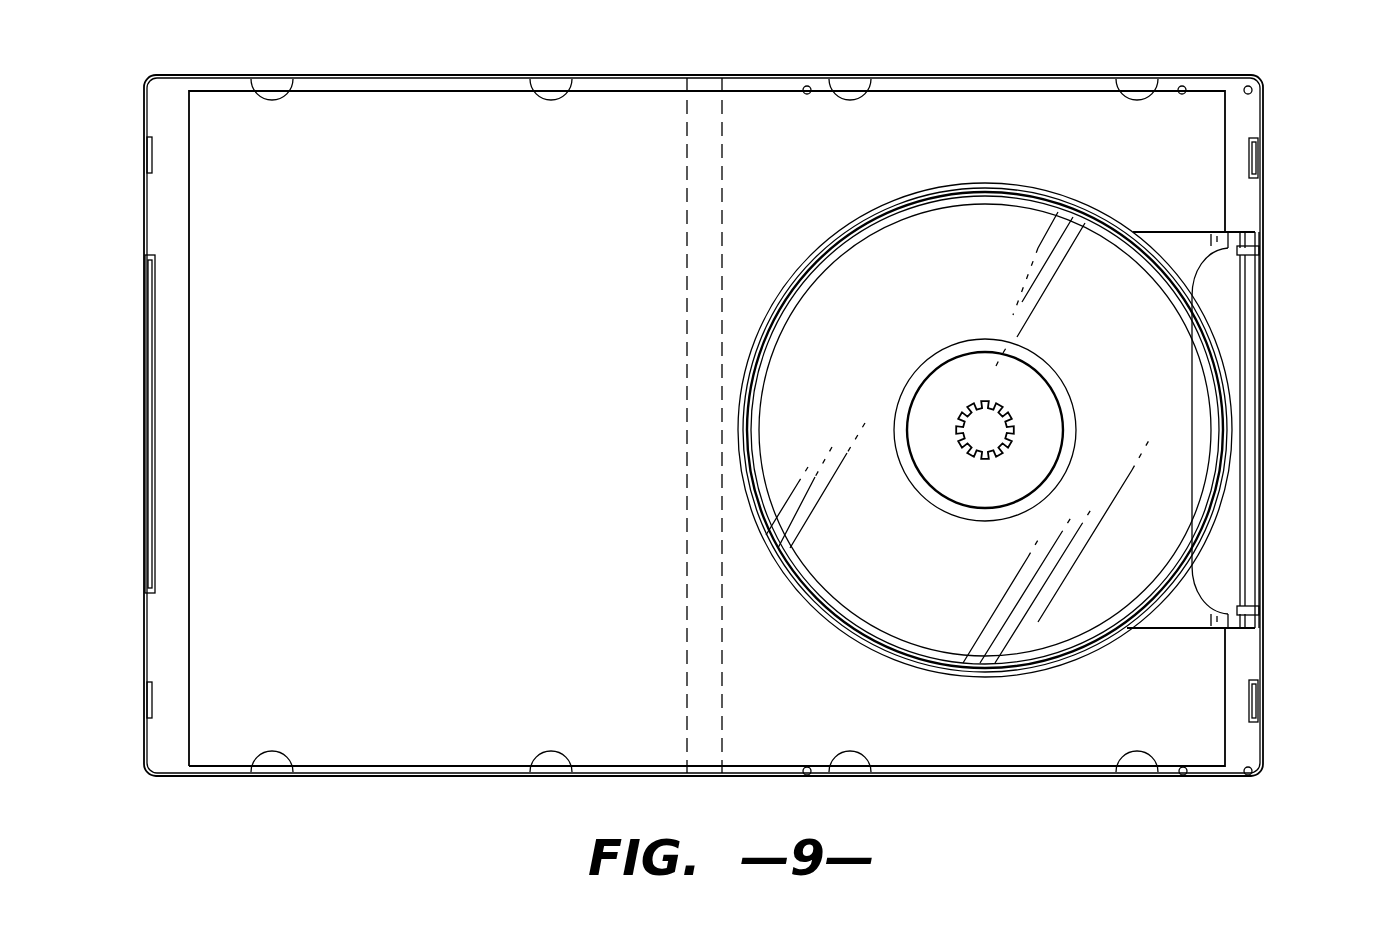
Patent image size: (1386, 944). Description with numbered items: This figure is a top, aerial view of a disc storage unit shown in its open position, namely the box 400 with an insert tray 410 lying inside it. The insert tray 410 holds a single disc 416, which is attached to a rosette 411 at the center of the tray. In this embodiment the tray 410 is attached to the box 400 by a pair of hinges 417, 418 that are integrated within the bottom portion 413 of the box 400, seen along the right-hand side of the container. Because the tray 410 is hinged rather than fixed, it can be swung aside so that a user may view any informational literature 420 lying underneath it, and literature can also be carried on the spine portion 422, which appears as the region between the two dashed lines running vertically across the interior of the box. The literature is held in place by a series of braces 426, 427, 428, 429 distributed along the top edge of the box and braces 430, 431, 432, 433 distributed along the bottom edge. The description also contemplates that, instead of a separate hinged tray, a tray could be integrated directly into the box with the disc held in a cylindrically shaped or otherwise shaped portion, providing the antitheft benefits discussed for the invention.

The box 400 is at (1332, 120).
The insert tray 410 is at (875, 205).
The rosette 411 is at (984, 425).
The bottom portion 413 is at (1263, 742).
The disc 416 is at (984, 267).
The hinge 417 is at (1256, 228).
The hinge 418 is at (1245, 618).
The informational literature 420 is at (188, 745).
The spine portion 422 is at (705, 78).
The brace 426 is at (270, 96).
The brace 427 is at (552, 96).
The brace 428 is at (850, 96).
The brace 429 is at (1139, 96).
The brace 430 is at (272, 768).
The brace 431 is at (552, 768).
The brace 432 is at (851, 768).
The brace 433 is at (1138, 768).